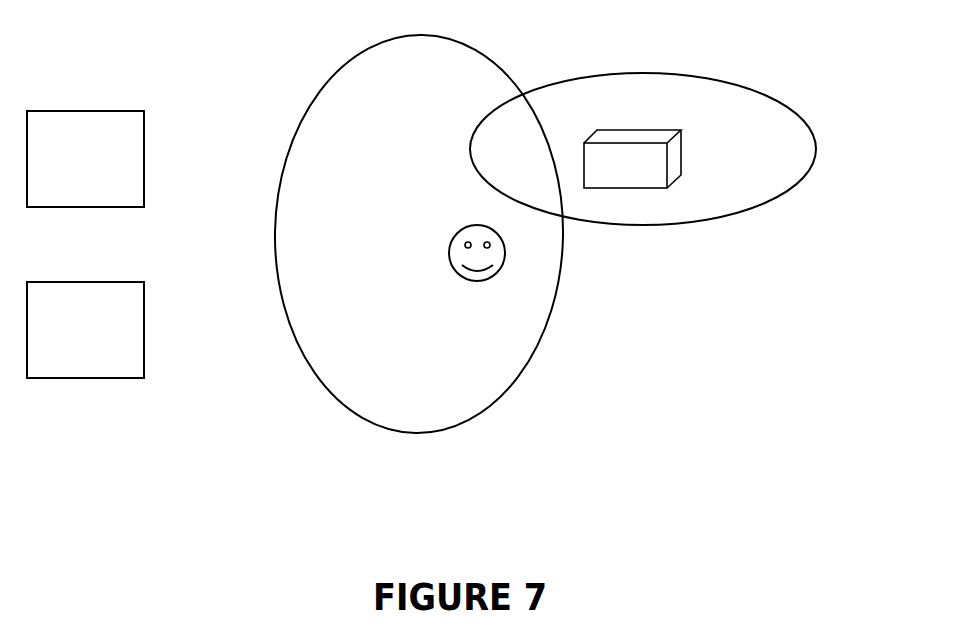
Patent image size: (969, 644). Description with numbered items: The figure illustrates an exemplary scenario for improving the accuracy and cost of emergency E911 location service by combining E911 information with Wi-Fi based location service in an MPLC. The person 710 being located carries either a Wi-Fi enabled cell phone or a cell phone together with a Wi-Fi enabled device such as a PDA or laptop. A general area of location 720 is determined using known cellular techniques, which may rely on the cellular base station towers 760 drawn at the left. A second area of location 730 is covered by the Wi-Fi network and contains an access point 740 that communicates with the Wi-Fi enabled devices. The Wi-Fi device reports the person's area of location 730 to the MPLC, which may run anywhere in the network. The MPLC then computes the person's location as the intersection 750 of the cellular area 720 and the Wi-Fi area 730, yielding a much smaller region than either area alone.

The person 710 is at (488, 282).
The general area of location 720 is at (506, 377).
The area of location 730 is at (648, 225).
The access point 740 is at (682, 151).
The intersection of the location areas 750 is at (505, 148).
The cellular base station towers 760 is at (45, 208).